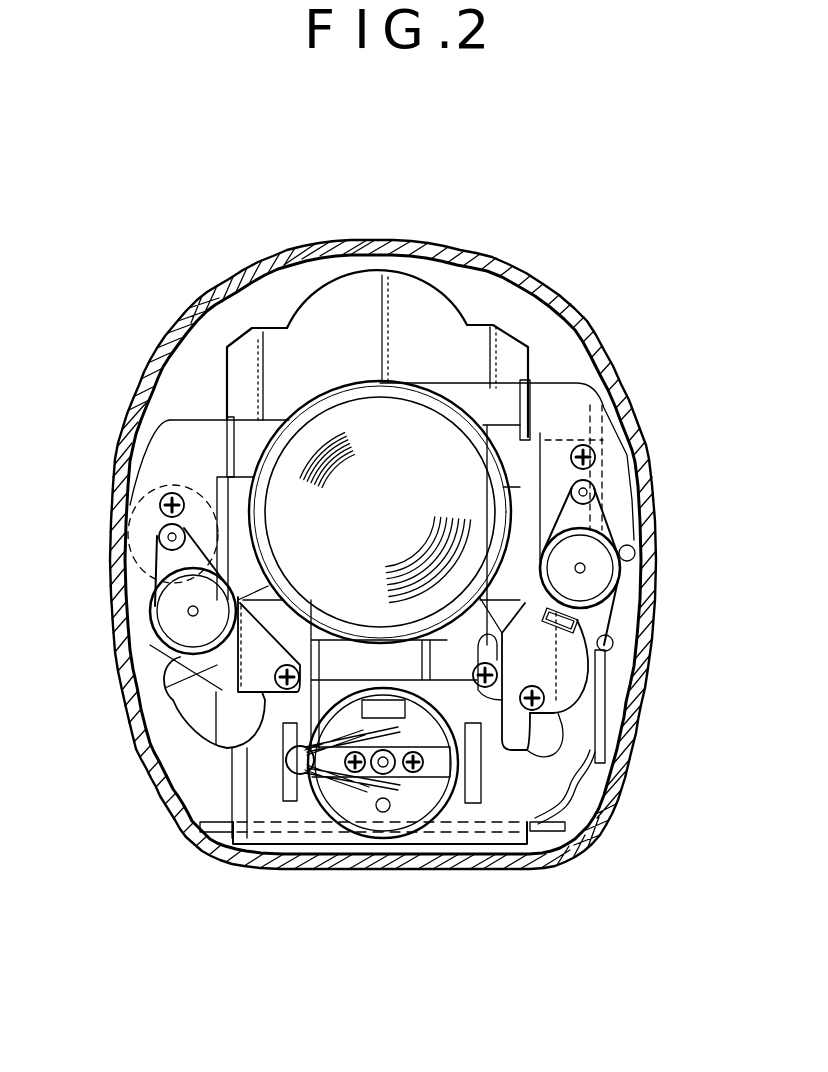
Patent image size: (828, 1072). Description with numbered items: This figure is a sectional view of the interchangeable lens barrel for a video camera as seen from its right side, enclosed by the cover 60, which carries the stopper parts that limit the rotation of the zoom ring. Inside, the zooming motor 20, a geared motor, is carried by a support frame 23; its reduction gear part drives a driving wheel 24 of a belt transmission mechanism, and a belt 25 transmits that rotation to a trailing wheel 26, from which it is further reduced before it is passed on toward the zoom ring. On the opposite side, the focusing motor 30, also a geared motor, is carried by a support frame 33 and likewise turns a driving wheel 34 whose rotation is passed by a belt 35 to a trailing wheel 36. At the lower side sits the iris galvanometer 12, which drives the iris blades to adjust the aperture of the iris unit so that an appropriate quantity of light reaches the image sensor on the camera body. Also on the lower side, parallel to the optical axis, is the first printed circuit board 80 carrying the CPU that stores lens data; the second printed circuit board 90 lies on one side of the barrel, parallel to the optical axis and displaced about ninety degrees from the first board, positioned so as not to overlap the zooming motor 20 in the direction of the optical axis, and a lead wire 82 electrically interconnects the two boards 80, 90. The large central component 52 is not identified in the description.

The iris galvanometer 12 is at (410, 797).
The zooming motor 20 is at (133, 497).
The support frame 23 is at (210, 667).
The driving wheel 24 is at (158, 530).
The belt 25 is at (155, 563).
The trailing wheel 26 is at (173, 618).
The focusing motor 30 is at (545, 452).
The support frame 33 is at (570, 655).
The driving wheel 34 is at (593, 487).
The belt 35 is at (613, 519).
The trailing wheel 36 is at (585, 581).
The lens 52 is at (405, 425).
The cover 60 is at (245, 287).
The first printed circuit board 80 is at (550, 838).
The lead wire 82 is at (573, 783).
The second printed circuit board 90 is at (600, 720).